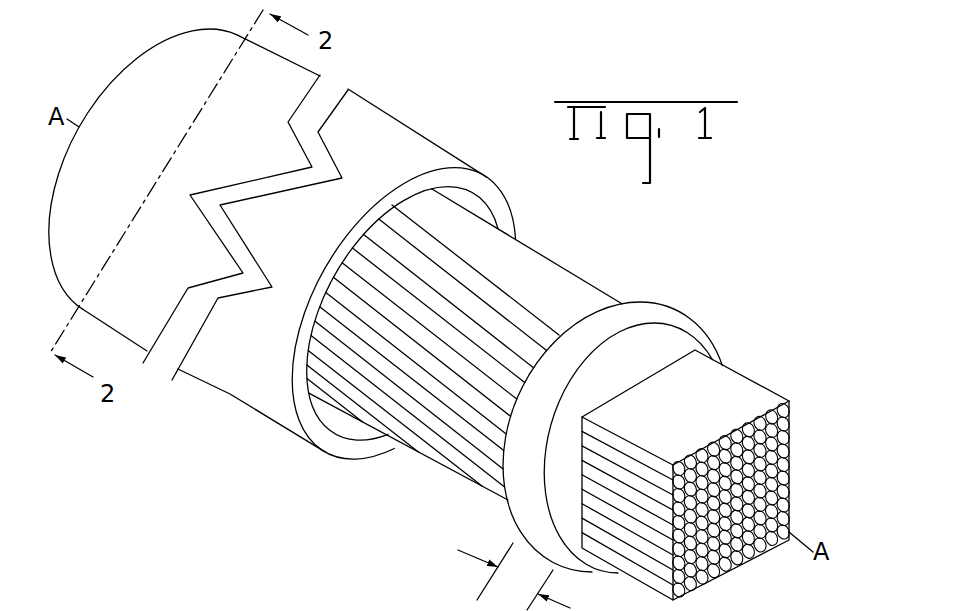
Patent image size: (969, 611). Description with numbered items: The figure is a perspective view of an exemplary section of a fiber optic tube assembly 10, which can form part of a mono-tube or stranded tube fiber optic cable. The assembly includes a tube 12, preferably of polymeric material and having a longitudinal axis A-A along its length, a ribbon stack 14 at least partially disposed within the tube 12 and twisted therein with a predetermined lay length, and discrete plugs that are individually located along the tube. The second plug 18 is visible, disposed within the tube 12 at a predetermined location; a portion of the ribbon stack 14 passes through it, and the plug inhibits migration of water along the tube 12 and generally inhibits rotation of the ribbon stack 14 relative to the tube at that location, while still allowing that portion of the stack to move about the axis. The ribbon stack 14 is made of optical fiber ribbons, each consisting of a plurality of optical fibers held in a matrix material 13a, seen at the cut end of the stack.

The fiber optic tube assembly 10 is at (101, 85).
The tube 12 is at (377, 148).
The ribbon stack 14 is at (535, 269).
The second plug 18 is at (699, 334).
The matrix material 13a is at (250, 610).